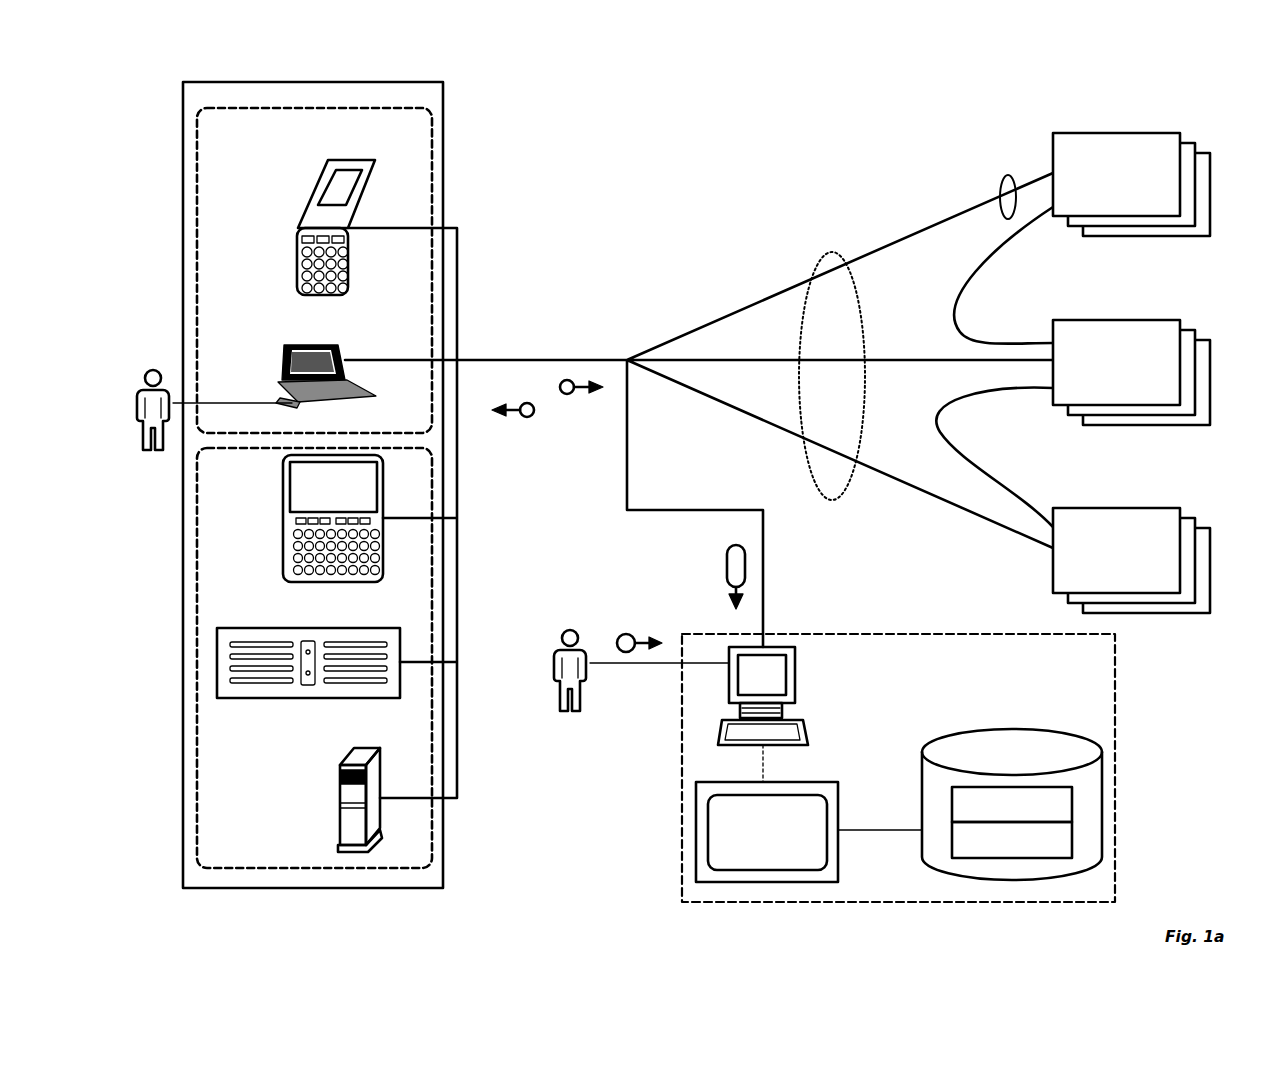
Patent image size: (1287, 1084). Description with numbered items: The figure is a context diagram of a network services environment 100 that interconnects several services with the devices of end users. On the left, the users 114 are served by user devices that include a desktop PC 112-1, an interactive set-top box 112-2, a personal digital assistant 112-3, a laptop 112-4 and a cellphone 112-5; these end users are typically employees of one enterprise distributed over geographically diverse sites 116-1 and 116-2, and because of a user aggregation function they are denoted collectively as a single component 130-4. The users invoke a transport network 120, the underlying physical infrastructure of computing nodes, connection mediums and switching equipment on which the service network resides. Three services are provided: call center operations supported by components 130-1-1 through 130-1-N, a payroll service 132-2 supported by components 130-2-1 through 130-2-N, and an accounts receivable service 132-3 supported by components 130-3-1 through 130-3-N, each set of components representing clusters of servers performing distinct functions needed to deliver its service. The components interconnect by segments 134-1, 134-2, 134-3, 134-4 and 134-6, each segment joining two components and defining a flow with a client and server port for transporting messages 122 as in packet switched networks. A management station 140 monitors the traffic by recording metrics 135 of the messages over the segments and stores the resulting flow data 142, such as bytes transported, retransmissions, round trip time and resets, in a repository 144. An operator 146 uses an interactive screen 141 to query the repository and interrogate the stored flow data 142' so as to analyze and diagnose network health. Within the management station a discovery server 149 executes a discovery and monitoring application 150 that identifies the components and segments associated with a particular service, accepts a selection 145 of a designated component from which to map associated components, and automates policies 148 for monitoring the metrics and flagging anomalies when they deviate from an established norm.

The network services environment 100 is at (872, 114).
The users 114 is at (153, 368).
The desktop PC 112-1 is at (338, 823).
The interactive set-top box 112-2 is at (290, 698).
The personal digital assistant 112-3 is at (283, 488).
The laptop 112-4 is at (286, 352).
The cellphone 112-5 is at (302, 215).
The geographically diverse site 116-1 is at (432, 168).
The geographically diverse site 116-2 is at (433, 818).
The transport network 120 is at (832, 252).
The messages 122 is at (532, 417).
The end users component 130-4 is at (443, 888).
The call center component 130-1-1 is at (1180, 133).
The call center component 130-1-N is at (1210, 237).
The payroll component 130-2-1 is at (1164, 344).
The payroll component 130-2-N is at (1210, 426).
The accounts receivable component 130-3-1 is at (1159, 535).
The accounts receivable component 130-3-N is at (1210, 614).
The payroll service 132-2 is at (1180, 320).
The accounts receivable service 132-3 is at (1180, 508).
The segment 134-1 is at (850, 262).
The segment 134-2 is at (963, 328).
The segment 134-3 is at (951, 360).
The segment 134-4 is at (886, 474).
The segment 134-6 is at (948, 403).
The metrics 135 is at (1005, 175).
The management station 140 is at (682, 700).
The interactive screen 141 is at (763, 714).
The flow data 142 is at (686, 577).
The stored flow data 142' is at (1057, 793).
The repository 144 is at (966, 732).
The selection 145 is at (623, 634).
The operator 146 is at (558, 694).
The policies 148 is at (1072, 848).
The discovery server 149 is at (696, 834).
The discovery and monitoring application 150 is at (710, 864).